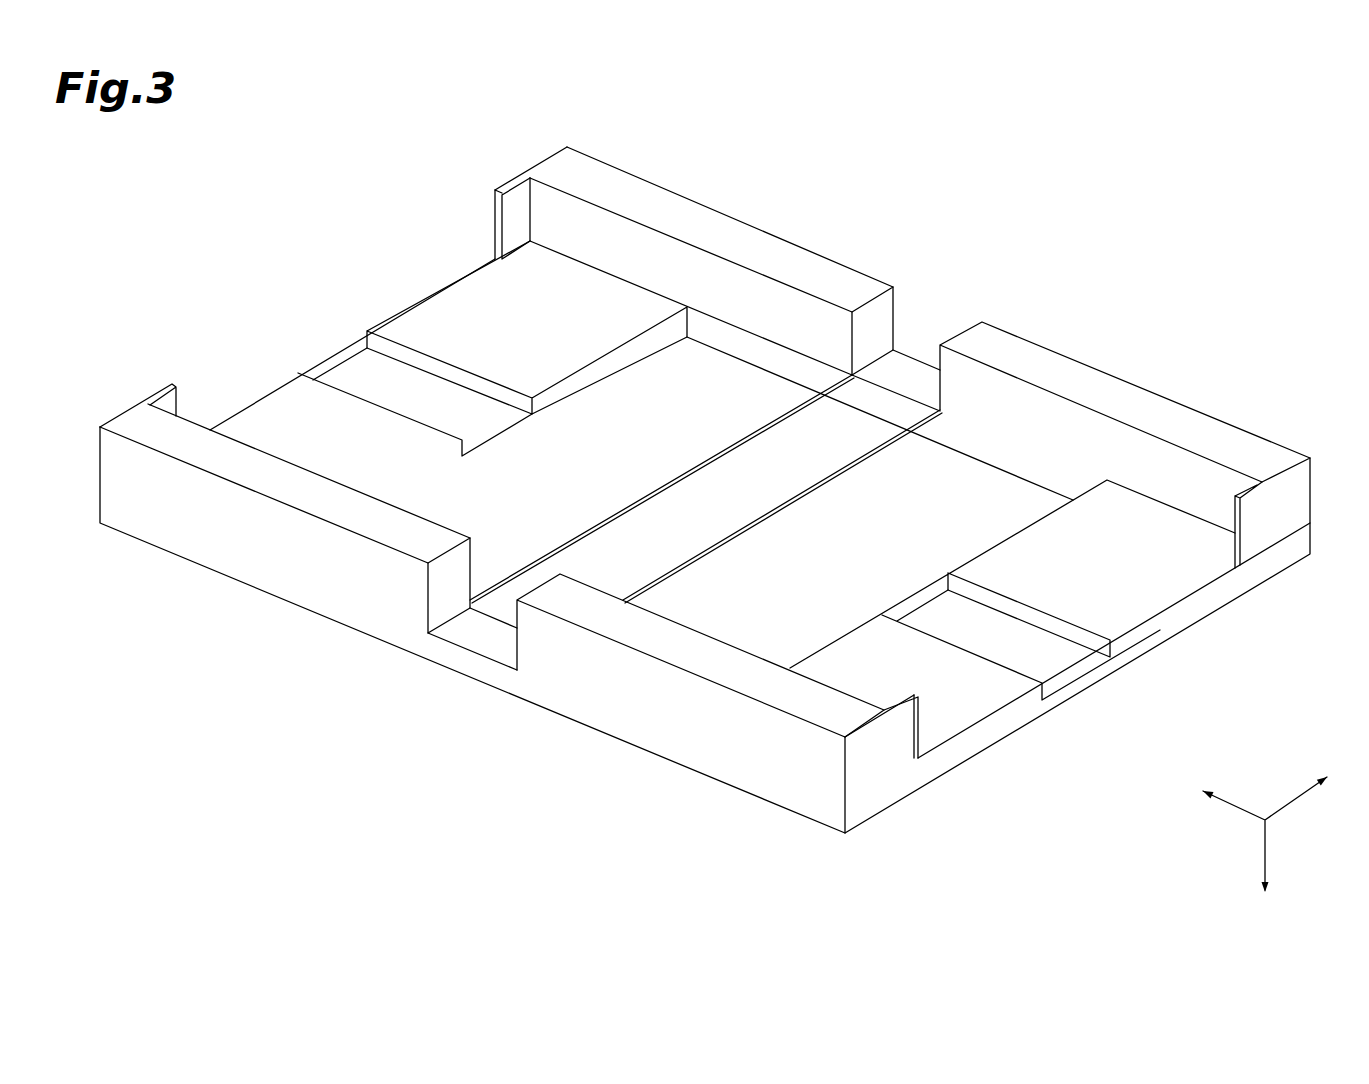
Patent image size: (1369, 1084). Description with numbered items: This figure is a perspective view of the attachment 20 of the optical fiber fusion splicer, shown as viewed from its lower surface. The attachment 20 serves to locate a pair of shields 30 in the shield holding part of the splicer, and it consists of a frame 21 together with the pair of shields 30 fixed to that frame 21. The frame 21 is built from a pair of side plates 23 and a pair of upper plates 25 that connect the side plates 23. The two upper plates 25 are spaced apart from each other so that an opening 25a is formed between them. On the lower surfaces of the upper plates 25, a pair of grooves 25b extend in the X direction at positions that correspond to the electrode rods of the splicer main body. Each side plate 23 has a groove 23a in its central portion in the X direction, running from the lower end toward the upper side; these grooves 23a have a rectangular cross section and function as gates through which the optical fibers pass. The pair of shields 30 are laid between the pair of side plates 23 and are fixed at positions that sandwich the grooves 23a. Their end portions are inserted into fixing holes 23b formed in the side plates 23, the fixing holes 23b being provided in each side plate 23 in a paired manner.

The attachment 20 is at (1016, 190).
The frame 21 is at (637, 176).
The side plates 23 is at (713, 230).
The grooves 23a is at (908, 375).
The fixing holes 23b is at (850, 372).
The upper plates 25 is at (450, 312).
The opening 25a is at (677, 436).
The grooves 25b is at (357, 372).
The shields 30 is at (745, 441).